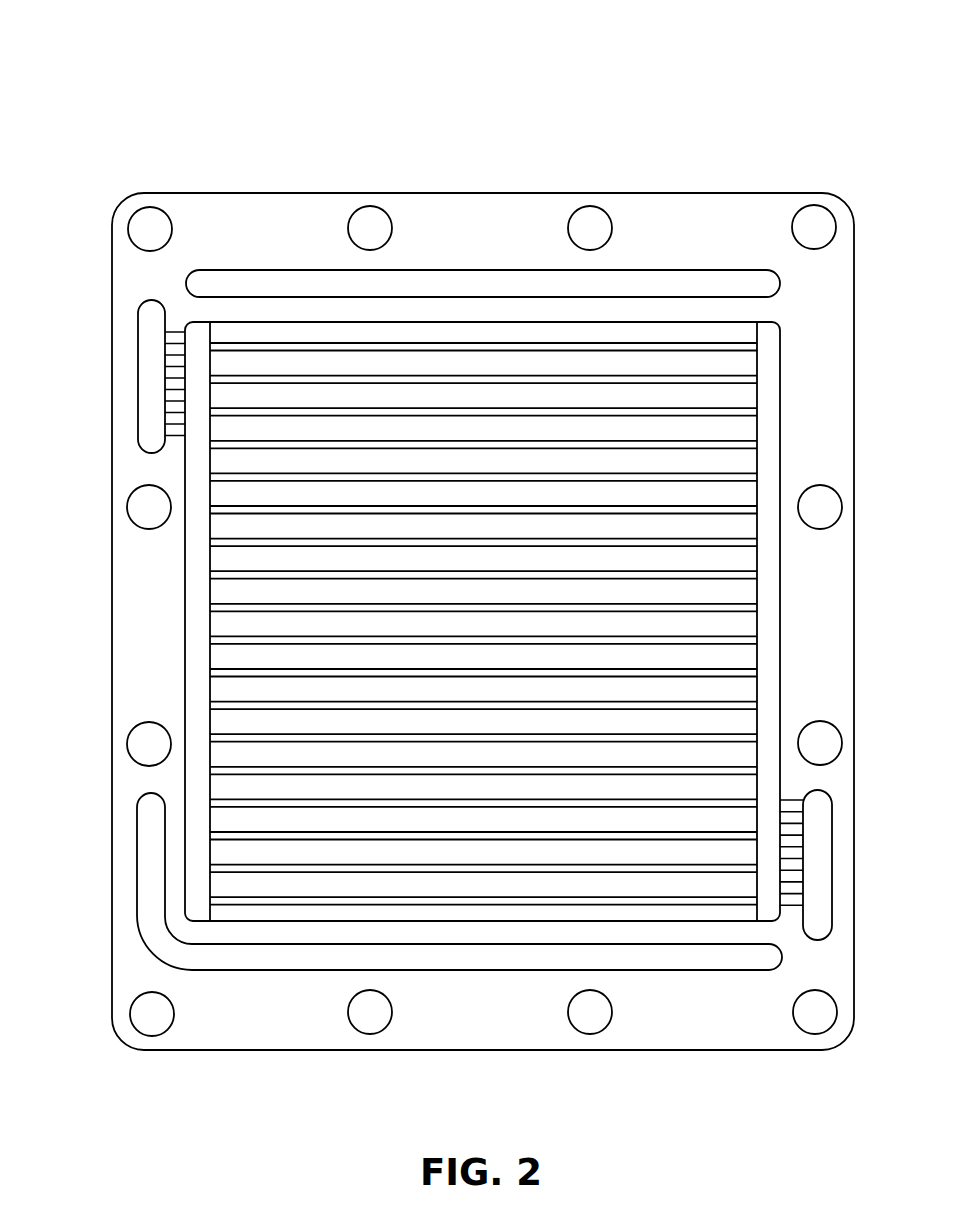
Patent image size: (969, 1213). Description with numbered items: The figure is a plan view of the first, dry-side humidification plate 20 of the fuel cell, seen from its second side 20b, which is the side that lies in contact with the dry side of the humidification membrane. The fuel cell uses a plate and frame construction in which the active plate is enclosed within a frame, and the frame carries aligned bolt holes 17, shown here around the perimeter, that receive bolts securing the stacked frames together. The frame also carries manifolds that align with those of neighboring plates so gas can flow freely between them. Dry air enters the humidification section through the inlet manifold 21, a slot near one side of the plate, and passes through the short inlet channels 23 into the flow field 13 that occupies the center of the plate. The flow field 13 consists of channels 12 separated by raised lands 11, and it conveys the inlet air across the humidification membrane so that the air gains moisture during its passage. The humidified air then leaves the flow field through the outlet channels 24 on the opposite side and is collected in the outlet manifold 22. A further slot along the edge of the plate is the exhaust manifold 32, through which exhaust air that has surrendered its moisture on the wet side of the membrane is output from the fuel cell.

The first humidification plate 20 is at (480, 535).
The second side 20b is at (327, 63).
The bolt holes 17 is at (133, 222).
The exhaust manifold 32 is at (285, 283).
The outlet manifold 22 is at (138, 323).
The outlet channels 24 is at (172, 390).
The inlet manifold 21 is at (832, 817).
The inlet channels 23 is at (797, 891).
The flow field 13 is at (415, 621).
The channels 12 is at (222, 593).
The raised lands 11 is at (220, 640).